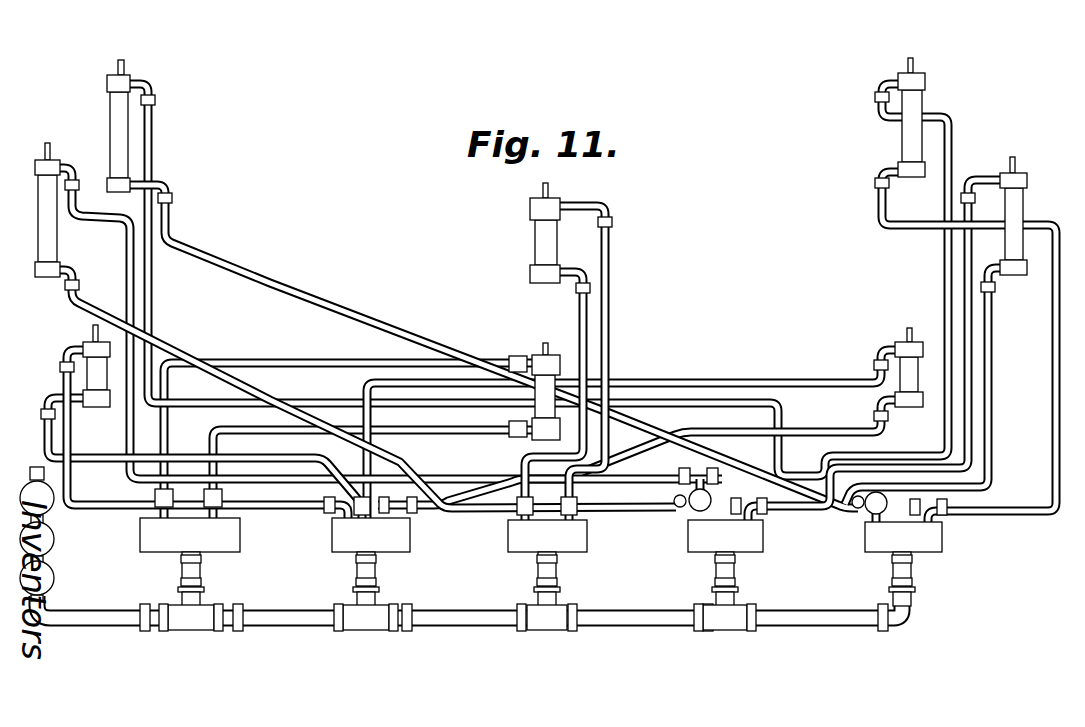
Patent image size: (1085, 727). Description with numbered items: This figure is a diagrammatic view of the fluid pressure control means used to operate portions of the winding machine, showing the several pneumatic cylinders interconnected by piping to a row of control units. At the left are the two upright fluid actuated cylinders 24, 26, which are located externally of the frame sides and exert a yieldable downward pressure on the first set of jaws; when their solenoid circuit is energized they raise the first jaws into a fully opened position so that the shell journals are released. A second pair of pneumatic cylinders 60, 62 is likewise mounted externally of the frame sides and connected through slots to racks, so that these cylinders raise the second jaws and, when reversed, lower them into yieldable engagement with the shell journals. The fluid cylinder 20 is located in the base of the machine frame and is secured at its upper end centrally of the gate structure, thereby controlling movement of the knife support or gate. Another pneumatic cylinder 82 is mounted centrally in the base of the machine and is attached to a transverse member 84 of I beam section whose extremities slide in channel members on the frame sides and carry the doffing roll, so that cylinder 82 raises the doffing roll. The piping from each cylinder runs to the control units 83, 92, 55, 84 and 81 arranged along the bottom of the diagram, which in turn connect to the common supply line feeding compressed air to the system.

The fluid cylinder 20 is at (571, 362).
The fluid actuated cylinder 24 is at (1020, 200).
The fluid actuated cylinder 26 is at (44, 218).
The valve manifold 55 is at (573, 545).
The pneumatic cylinder 60 is at (925, 108).
The pneumatic cylinder 62 is at (118, 118).
The valve manifold 81 is at (930, 548).
The pneumatic cylinder 82 is at (542, 236).
The valve manifold 83 is at (226, 545).
The transverse member 84 is at (760, 548).
The valve manifold 92 is at (400, 548).